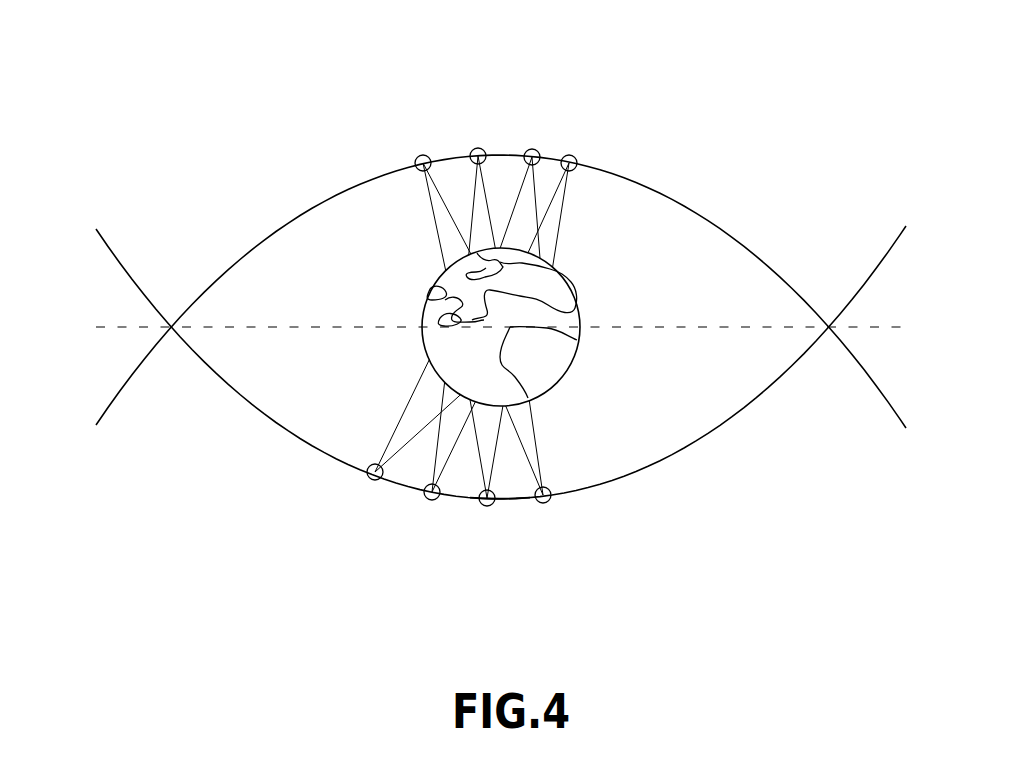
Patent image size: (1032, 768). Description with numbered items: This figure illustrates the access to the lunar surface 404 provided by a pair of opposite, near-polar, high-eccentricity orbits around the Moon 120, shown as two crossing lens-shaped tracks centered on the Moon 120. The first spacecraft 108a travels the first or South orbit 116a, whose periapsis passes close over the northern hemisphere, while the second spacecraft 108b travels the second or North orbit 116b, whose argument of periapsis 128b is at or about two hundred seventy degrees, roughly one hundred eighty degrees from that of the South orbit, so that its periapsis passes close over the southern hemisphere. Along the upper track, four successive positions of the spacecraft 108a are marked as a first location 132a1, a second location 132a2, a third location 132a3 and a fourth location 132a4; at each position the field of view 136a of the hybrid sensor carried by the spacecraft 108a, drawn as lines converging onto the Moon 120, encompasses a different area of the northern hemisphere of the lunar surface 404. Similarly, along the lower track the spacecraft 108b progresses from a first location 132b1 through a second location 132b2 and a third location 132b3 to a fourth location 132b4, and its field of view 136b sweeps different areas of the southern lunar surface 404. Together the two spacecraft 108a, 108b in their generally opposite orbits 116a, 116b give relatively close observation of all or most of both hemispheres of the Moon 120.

The first spacecraft 108a is at (418, 155).
The second spacecraft 108b is at (546, 503).
The first or South orbit 116a is at (272, 236).
The second or North orbit 116b is at (124, 276).
The Moon 120 is at (423, 299).
The argument of periapsis of the North orbit 128b is at (503, 502).
The first location 132a1 is at (416, 161).
The second location 132a2 is at (478, 148).
The third location 132a3 is at (532, 149).
The fourth location 132a4 is at (576, 160).
The first location 132b1 is at (368, 476).
The second location 132b2 is at (425, 496).
The third location 132b3 is at (482, 505).
The fourth location 132b4 is at (548, 488).
The field of view 136a is at (437, 230).
The field of view 136b is at (416, 394).
The lunar surface 404 is at (573, 296).